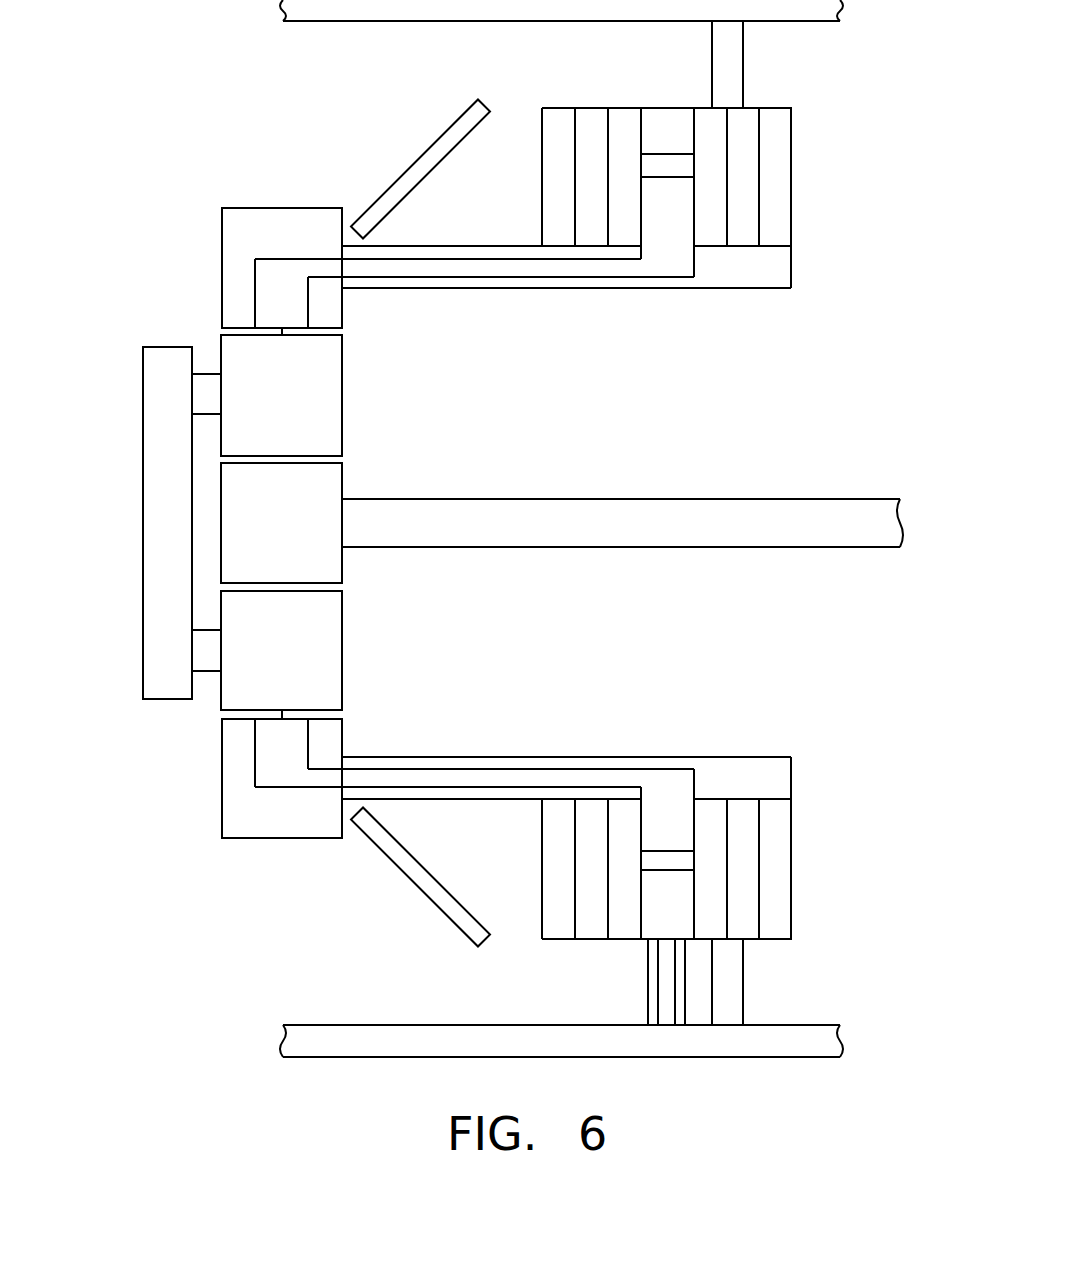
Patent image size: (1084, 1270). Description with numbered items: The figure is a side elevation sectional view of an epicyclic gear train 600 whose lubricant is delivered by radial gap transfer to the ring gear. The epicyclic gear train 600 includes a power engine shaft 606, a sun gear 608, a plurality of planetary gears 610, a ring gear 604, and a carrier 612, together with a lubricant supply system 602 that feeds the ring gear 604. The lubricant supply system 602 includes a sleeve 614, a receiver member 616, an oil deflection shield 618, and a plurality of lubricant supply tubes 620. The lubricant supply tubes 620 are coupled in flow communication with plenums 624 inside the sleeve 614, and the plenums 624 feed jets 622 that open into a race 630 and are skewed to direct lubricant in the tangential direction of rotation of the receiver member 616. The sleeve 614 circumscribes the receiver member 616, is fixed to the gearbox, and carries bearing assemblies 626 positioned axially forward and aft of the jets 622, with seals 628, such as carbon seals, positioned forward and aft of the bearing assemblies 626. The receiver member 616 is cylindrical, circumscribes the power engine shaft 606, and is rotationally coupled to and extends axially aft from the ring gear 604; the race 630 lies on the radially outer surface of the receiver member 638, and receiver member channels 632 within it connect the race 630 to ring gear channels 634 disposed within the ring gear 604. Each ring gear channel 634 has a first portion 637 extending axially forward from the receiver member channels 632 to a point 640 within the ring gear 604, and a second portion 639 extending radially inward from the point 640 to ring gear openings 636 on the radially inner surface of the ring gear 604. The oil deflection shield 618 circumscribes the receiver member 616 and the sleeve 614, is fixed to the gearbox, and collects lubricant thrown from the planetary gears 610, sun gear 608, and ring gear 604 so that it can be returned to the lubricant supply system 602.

The epicyclic gear train 600 is at (205, 127).
The lubricant supply system 602 is at (797, 243).
The ring gear 604 is at (303, 252).
The power engine shaft 606 is at (833, 517).
The sun gear 608 is at (317, 534).
The planetary gears 610 is at (312, 408).
The carrier 612 is at (167, 355).
The sleeve 614 is at (590, 108).
The receiver member 616 is at (595, 290).
The oil deflection shield 618 is at (423, 165).
The lubricant supply tubes 620 is at (647, 995).
The jets 622 is at (690, 221).
The plenums 624 is at (690, 152).
The bearing assemblies 626 is at (595, 213).
The seals 628 is at (560, 172).
The race 630 is at (670, 263).
The receiver member channels 632 is at (478, 270).
The ring gear channels 634 is at (317, 268).
The ring gear openings 636 is at (283, 337).
The first portion 637 is at (387, 267).
The receiver member 638 is at (470, 247).
The second portion 639 is at (273, 302).
The point 640 is at (253, 258).